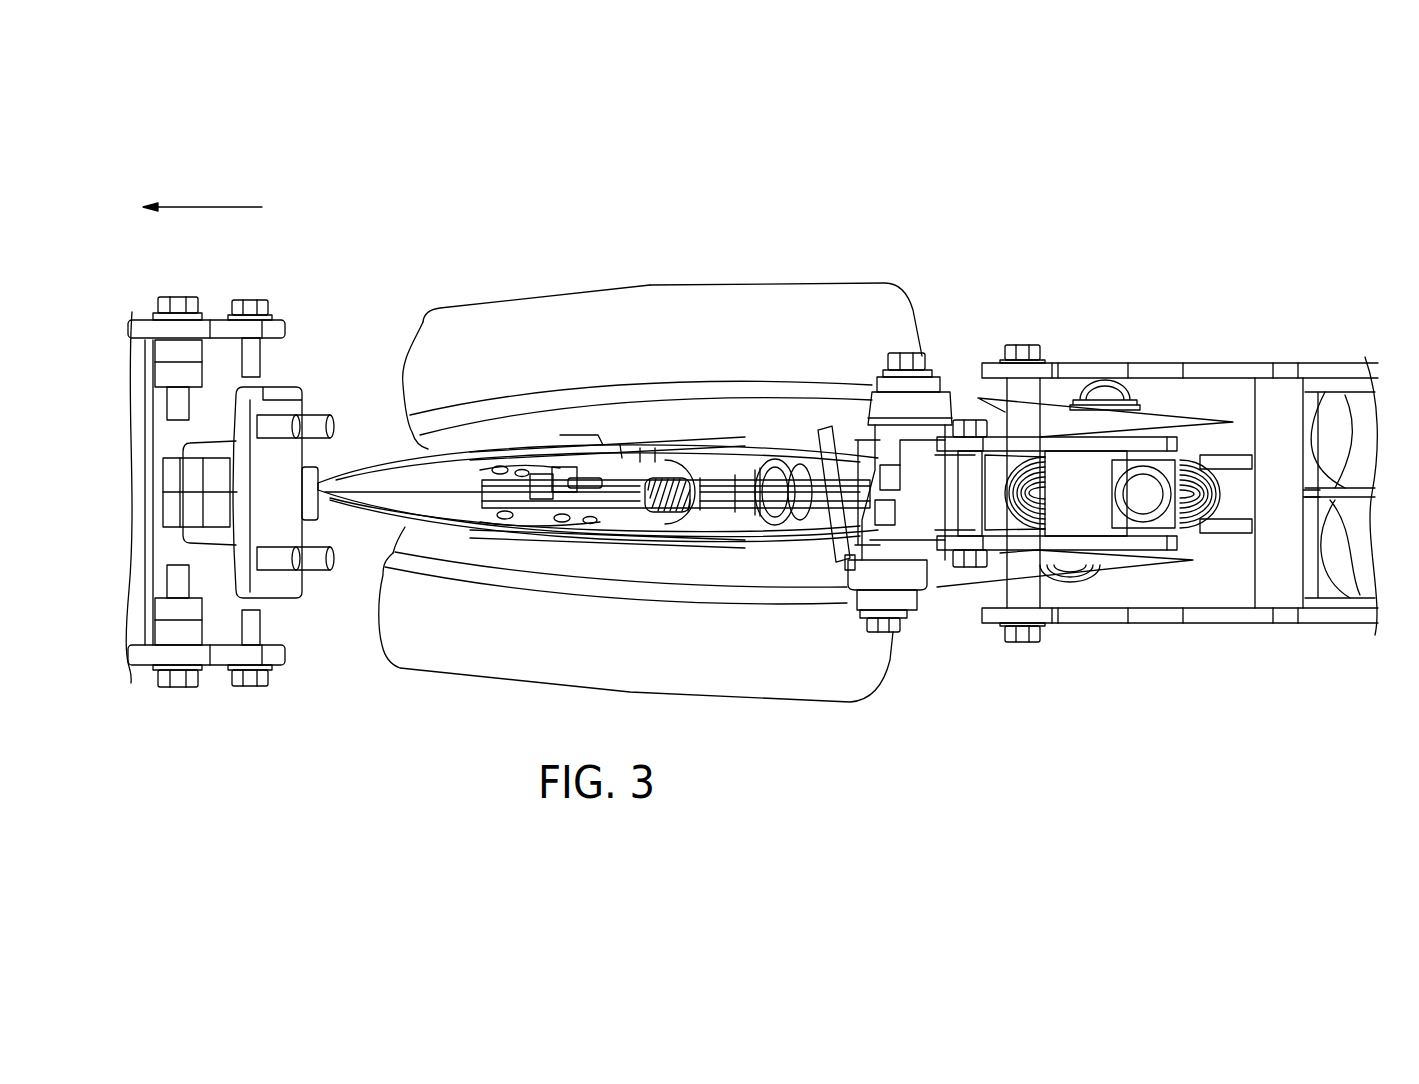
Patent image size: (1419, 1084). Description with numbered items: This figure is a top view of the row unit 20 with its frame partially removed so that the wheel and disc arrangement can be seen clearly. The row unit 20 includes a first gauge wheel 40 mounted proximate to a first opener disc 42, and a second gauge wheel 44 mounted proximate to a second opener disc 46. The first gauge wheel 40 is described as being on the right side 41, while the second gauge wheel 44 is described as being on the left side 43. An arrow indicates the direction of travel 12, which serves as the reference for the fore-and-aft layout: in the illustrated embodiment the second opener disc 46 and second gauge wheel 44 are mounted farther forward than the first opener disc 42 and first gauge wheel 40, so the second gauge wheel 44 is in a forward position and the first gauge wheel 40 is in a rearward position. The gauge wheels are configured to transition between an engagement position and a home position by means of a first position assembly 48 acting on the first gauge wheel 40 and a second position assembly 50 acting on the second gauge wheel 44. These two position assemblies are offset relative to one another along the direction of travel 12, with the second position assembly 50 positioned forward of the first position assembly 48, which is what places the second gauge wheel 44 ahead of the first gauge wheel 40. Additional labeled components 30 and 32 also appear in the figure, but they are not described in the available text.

The direction of travel 12 is at (228, 207).
The row unit 20 is at (1194, 758).
The wheel mounting bracket 30 is at (350, 362).
The wheel assembly 32 is at (403, 272).
The first gauge wheel 40 is at (818, 282).
The right side 41 is at (692, 230).
The first opener disc 42 is at (390, 455).
The left side 43 is at (727, 774).
The second gauge wheel 44 is at (851, 688).
The second opener disc 46 is at (367, 523).
The first position assembly 48 is at (965, 337).
The second position assembly 50 is at (939, 655).